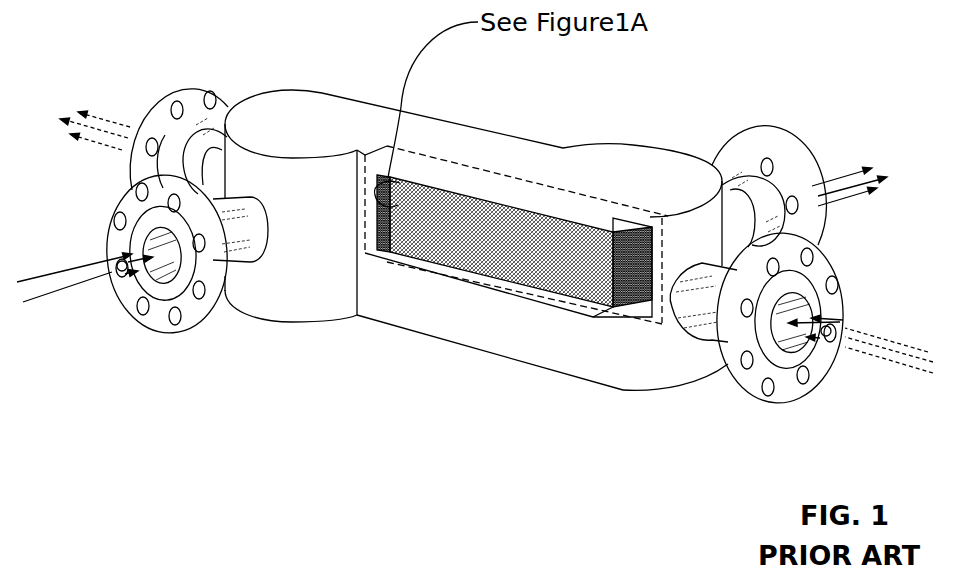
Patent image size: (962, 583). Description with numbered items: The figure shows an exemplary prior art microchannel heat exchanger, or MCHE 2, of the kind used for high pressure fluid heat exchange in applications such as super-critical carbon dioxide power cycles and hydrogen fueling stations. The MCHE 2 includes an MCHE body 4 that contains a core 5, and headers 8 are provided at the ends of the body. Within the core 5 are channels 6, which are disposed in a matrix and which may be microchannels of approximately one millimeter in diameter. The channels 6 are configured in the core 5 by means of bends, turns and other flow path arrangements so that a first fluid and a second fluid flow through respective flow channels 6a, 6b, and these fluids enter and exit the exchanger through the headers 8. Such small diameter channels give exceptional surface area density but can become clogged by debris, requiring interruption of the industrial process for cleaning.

The MCHE 2 is at (476, 358).
The MCHE body 4 is at (538, 128).
The core 5 is at (494, 241).
The channels 6 is at (567, 260).
The first flow channel 6a is at (112, 106).
The second flow channel 6b is at (68, 243).
The headers 8 is at (673, 148).